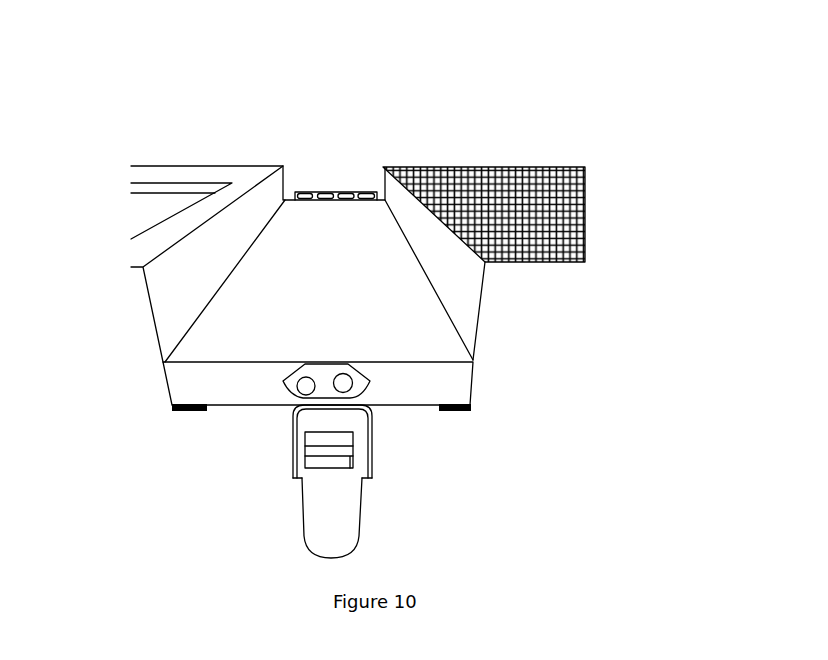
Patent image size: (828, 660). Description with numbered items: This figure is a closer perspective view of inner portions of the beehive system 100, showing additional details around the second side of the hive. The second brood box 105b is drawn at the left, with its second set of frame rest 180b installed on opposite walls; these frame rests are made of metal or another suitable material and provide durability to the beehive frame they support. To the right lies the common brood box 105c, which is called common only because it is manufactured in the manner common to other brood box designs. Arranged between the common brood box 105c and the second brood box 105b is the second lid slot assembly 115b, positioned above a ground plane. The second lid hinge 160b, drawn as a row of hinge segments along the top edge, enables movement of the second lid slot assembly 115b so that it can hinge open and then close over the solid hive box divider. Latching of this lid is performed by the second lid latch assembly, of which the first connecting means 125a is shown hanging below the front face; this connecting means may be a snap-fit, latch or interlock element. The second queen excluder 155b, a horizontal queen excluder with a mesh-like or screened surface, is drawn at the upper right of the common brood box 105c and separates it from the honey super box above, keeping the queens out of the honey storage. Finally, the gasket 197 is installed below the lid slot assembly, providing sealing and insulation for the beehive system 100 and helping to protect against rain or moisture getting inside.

The beehive system 100 is at (87, 87).
The second set of frame rest 180b is at (143, 184).
The second brood box 105b is at (160, 243).
The second lid hinge 160b is at (315, 192).
The second lid slot assembly 115b is at (367, 232).
The second queen excluder 155b is at (547, 202).
The common brood box 105c is at (502, 323).
The trim seal (gasket) 197 is at (190, 410).
The first connecting means 125a is at (342, 485).